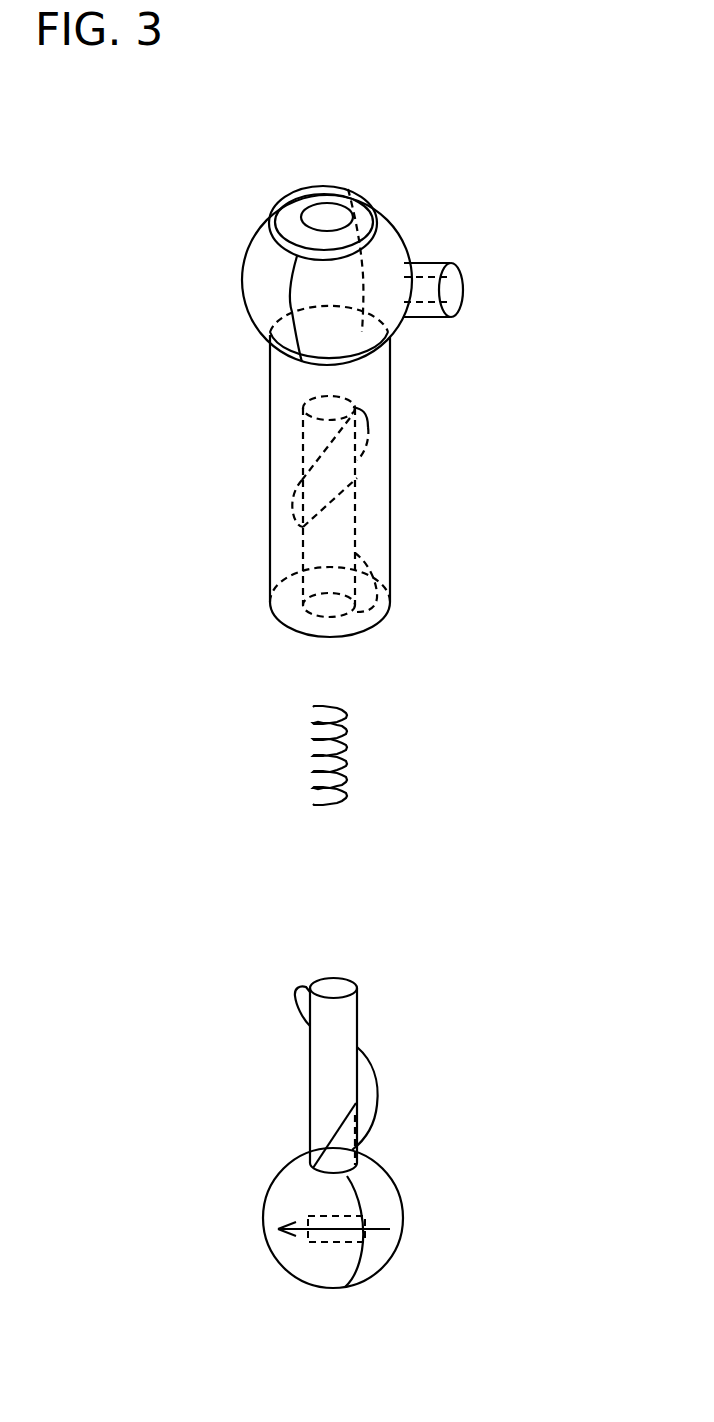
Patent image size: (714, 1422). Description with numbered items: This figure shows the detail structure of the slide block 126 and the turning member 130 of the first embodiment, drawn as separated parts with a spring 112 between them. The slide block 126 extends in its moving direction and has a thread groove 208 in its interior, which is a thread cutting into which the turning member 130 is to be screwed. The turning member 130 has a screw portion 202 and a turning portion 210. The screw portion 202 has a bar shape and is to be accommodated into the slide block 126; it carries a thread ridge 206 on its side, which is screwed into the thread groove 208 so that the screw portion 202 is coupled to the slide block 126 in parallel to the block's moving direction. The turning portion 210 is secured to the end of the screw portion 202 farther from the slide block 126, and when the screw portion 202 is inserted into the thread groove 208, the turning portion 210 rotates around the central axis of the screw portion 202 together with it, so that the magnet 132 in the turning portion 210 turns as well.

The slide block 126 is at (390, 430).
The thread groove 208 is at (333, 462).
The spring 112 is at (348, 718).
The turning member 130 is at (531, 1067).
The screw portion 202 is at (434, 992).
The thread ridge 206 is at (308, 1010).
The turning portion 210 is at (434, 1183).
The magnet 132 is at (325, 1243).